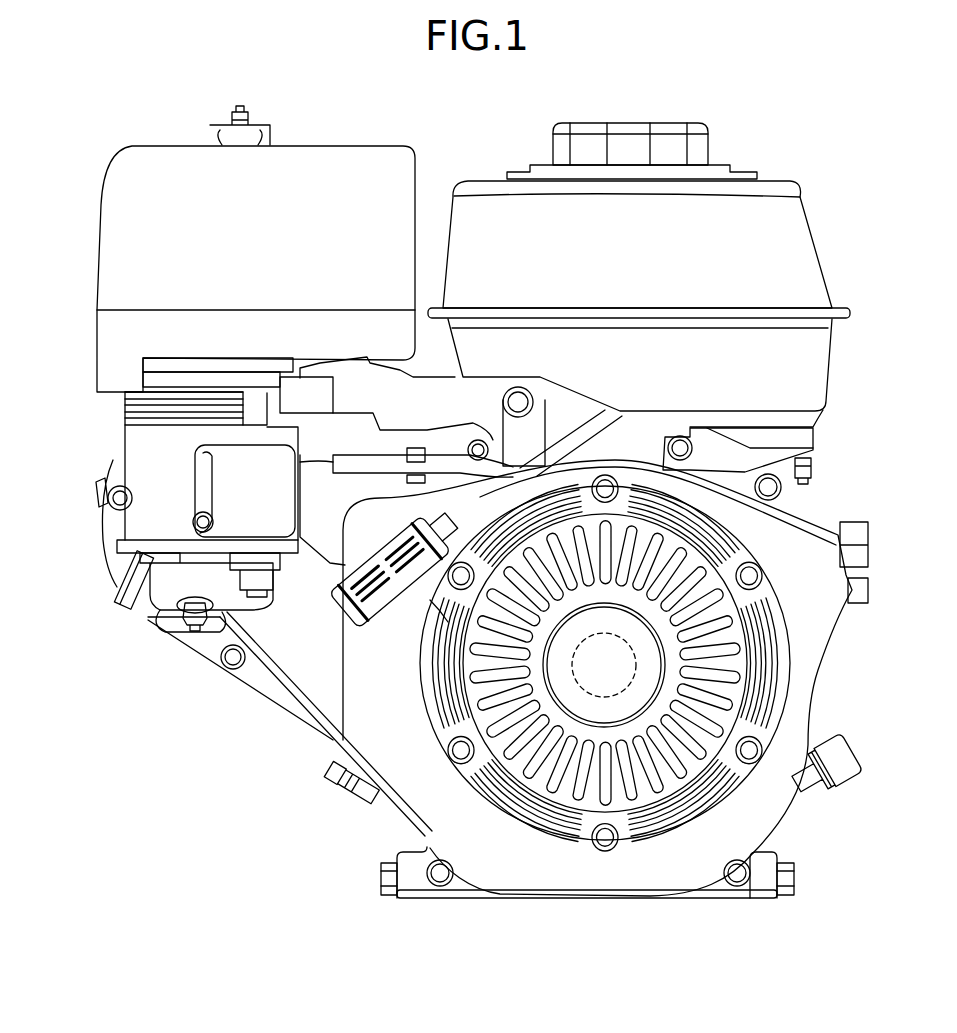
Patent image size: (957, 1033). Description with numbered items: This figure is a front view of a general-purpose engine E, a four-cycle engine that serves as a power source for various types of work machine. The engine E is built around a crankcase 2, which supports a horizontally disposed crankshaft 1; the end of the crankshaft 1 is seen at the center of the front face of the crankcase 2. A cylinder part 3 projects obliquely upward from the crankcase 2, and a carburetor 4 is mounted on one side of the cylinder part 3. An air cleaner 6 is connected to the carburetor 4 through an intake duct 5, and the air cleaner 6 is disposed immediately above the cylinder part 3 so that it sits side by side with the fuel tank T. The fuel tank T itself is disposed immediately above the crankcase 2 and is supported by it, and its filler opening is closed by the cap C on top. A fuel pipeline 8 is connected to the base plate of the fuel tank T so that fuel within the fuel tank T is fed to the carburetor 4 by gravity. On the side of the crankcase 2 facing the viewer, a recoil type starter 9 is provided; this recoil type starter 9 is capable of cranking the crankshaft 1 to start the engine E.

The crankshaft 1 is at (600, 633).
The crankcase 2 is at (400, 812).
The cylinder part 3 is at (255, 670).
The carburetor 4 is at (174, 598).
The intake duct 5 is at (135, 465).
The air cleaner 6 is at (259, 248).
The fuel pipeline 8 is at (567, 437).
The recoil type starter 9 is at (397, 620).
The fuel tank cap C is at (697, 135).
The general-purpose engine E is at (797, 548).
The fuel tank T is at (637, 282).